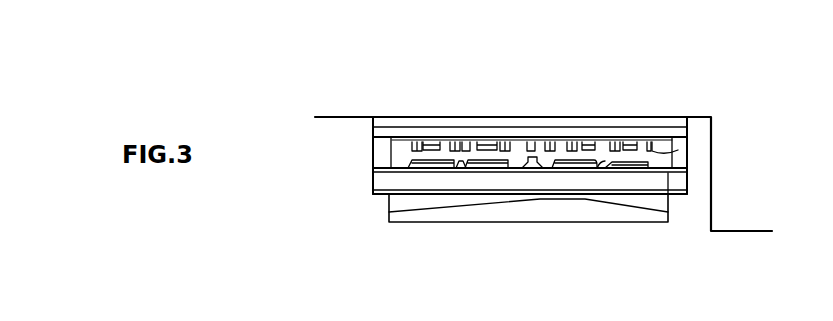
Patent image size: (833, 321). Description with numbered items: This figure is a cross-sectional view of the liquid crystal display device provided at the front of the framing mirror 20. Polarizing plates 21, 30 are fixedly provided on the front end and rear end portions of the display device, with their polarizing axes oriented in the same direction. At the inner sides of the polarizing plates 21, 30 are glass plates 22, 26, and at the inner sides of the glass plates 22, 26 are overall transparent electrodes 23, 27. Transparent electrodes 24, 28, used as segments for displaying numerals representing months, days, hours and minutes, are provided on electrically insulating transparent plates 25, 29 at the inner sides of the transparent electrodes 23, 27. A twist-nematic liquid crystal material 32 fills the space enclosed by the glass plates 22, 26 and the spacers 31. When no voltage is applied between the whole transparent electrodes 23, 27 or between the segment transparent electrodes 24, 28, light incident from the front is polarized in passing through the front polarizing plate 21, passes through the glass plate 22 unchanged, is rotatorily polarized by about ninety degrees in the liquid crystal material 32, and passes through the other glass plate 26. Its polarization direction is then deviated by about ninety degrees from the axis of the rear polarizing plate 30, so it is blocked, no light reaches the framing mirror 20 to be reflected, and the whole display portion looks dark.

The framing mirror 20 is at (442, 214).
The polarizing plate 21 is at (375, 116).
The glass plate 22 is at (373, 128).
The transparent electrode 23 is at (688, 126).
The transparent electrode 24 is at (418, 142).
The electrically insulating transparent plate 25 is at (416, 148).
The glass plate 26 is at (382, 180).
The transparent electrode 27 is at (667, 173).
The transparent electrode 28 is at (410, 161).
The electrically insulating transparent plate 29 is at (446, 165).
The polarizing plate 30 is at (375, 194).
The spacer 31 is at (382, 160).
The liquid crystal material 32 is at (396, 143).